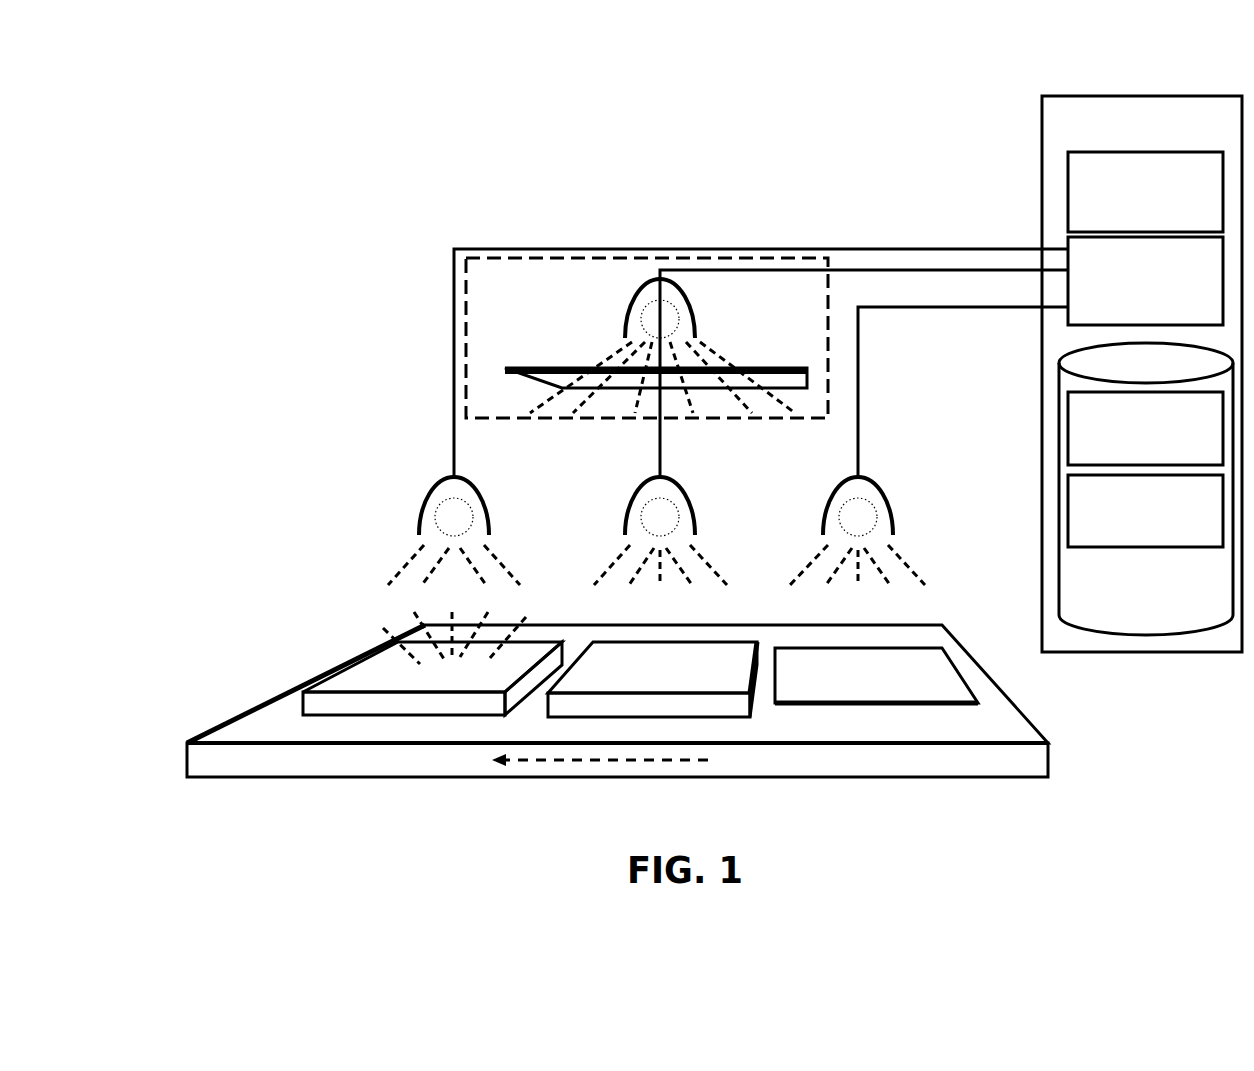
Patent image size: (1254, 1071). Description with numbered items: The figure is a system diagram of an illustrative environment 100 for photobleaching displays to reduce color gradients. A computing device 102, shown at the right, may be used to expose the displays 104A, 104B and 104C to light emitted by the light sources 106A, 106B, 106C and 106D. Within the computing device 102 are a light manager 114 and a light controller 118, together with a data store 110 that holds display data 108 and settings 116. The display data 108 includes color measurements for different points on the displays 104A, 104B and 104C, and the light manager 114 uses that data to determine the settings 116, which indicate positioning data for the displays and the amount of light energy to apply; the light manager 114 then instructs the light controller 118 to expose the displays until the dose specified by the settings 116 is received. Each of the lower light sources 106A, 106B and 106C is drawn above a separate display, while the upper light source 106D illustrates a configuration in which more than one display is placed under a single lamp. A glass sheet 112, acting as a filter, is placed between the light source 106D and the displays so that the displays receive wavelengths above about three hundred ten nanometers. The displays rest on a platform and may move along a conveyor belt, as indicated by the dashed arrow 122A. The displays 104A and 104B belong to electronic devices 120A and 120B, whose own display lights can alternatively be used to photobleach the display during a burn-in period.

The environment 100 is at (252, 105).
The computing device 102 is at (1142, 374).
The light manager 114 is at (1145, 192).
The light controller 118 is at (1145, 281).
The settings 116 is at (1145, 428).
The display data 108 is at (1145, 511).
The data store 110 is at (1146, 489).
The light source 106A is at (482, 475).
The light source 106B is at (693, 475).
The light source 106C is at (892, 478).
The light source 106D is at (605, 308).
The glass sheet 112 is at (555, 357).
The display 104A is at (419, 687).
The display 104B is at (666, 667).
The display 104C is at (922, 670).
The electronic device 120A is at (402, 718).
The electronic device 120B is at (647, 718).
The dashed arrow 122A is at (610, 762).